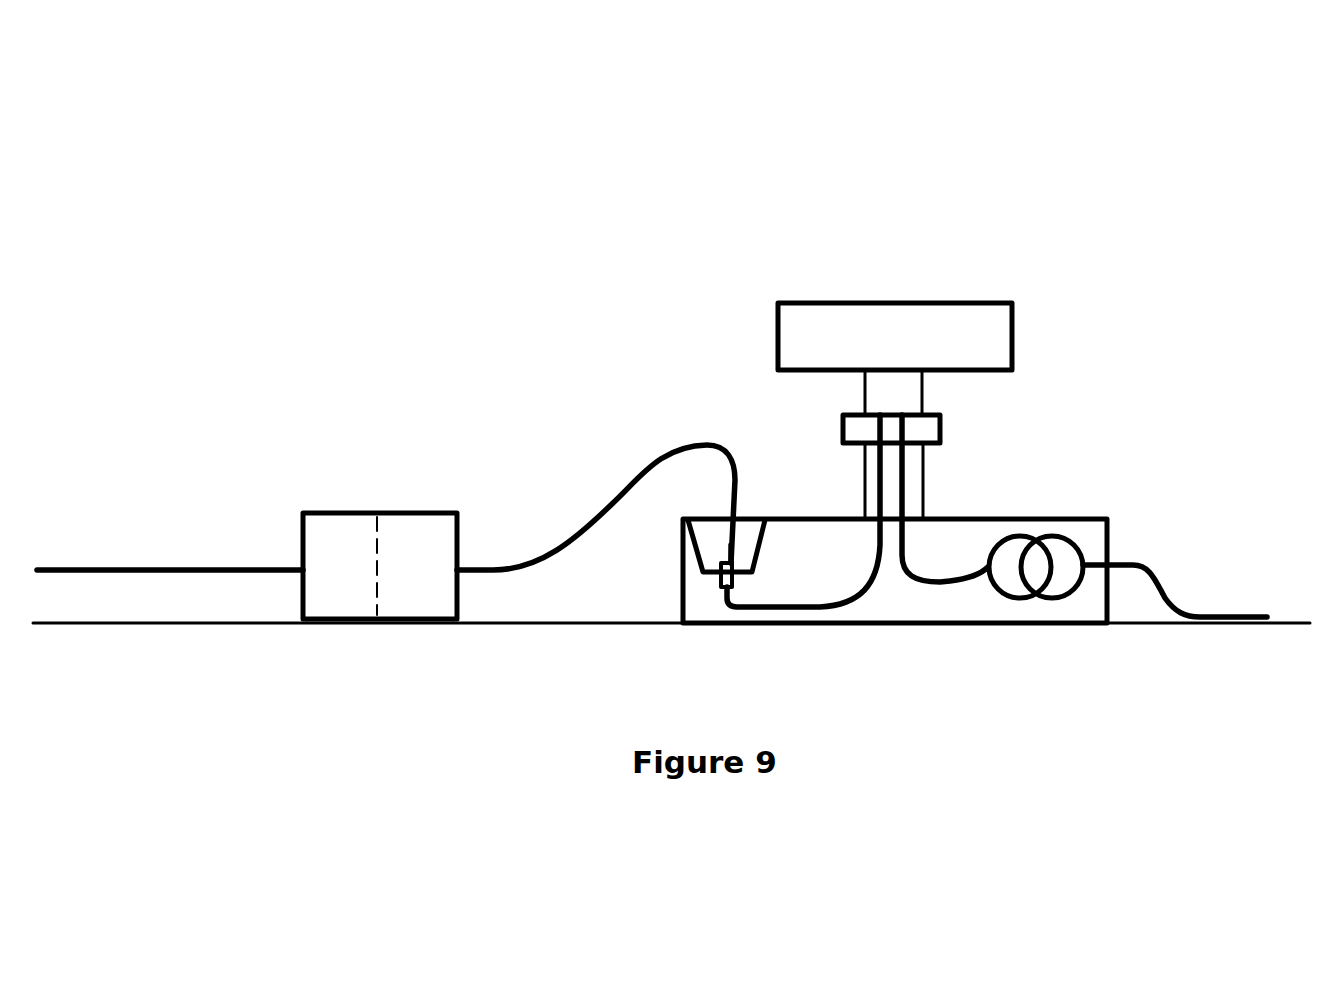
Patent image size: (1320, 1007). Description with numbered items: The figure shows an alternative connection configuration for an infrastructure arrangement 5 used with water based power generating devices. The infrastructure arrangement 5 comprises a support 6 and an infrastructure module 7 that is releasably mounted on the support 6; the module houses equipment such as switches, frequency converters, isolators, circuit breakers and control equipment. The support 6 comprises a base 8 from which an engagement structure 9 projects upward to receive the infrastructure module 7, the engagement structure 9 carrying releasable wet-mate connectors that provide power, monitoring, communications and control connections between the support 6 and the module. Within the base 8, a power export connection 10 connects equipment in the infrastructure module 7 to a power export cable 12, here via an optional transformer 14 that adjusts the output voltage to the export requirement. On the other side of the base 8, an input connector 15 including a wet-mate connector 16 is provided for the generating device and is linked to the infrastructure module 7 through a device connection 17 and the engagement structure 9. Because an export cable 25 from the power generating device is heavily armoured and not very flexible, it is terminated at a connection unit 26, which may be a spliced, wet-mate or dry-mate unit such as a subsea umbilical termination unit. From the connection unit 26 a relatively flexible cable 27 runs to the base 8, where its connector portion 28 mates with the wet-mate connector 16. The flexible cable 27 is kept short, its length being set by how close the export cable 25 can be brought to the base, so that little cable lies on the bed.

The infrastructure arrangement 5 is at (1166, 178).
The support 6 is at (1141, 418).
The infrastructure module 7 is at (1010, 297).
The base 8 is at (1095, 533).
The engagement structure 9 is at (913, 470).
The power export connection 10 is at (948, 588).
The power export cable 12 is at (1172, 598).
The transformer 14 is at (1028, 597).
The input connector 15 is at (765, 520).
The wet-mate connector 16 is at (720, 580).
The device connection 17 is at (832, 603).
The export cable 25 is at (155, 567).
The connection unit 26 is at (358, 533).
The flexible cable 27 is at (563, 545).
The connector portion 28 is at (723, 563).